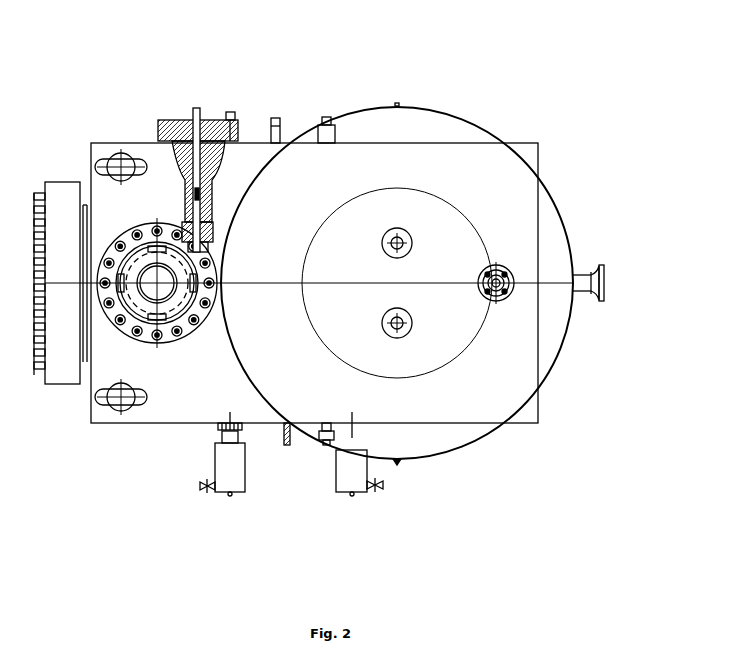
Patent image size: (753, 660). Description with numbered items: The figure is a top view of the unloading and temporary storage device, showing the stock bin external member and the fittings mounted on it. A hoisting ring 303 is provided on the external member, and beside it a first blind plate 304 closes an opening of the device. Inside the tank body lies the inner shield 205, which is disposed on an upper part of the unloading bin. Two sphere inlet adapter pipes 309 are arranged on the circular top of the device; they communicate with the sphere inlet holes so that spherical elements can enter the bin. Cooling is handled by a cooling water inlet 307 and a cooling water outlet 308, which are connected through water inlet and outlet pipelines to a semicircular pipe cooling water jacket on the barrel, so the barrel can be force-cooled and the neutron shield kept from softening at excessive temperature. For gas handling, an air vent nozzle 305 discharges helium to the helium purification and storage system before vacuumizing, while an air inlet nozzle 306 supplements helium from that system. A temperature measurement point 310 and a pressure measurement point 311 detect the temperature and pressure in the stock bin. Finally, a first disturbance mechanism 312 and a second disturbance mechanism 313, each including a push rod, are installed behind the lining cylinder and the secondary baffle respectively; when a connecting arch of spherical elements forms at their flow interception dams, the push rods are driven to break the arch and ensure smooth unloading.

The inner shield 205 is at (183, 227).
The hoisting ring 303 is at (110, 158).
The first blind plate 304 is at (208, 125).
The air vent nozzle 305 is at (275, 118).
The air inlet nozzle 306 is at (323, 117).
The cooling water inlet 307 is at (513, 272).
The cooling water outlet 308 is at (587, 295).
The sphere inlet adapter pipe 309 is at (407, 248).
The temperature measurement point 310 is at (325, 442).
The pressure measurement point 311 is at (287, 442).
The first disturbance mechanism 312 is at (380, 483).
The second disturbance mechanism 313 is at (228, 470).